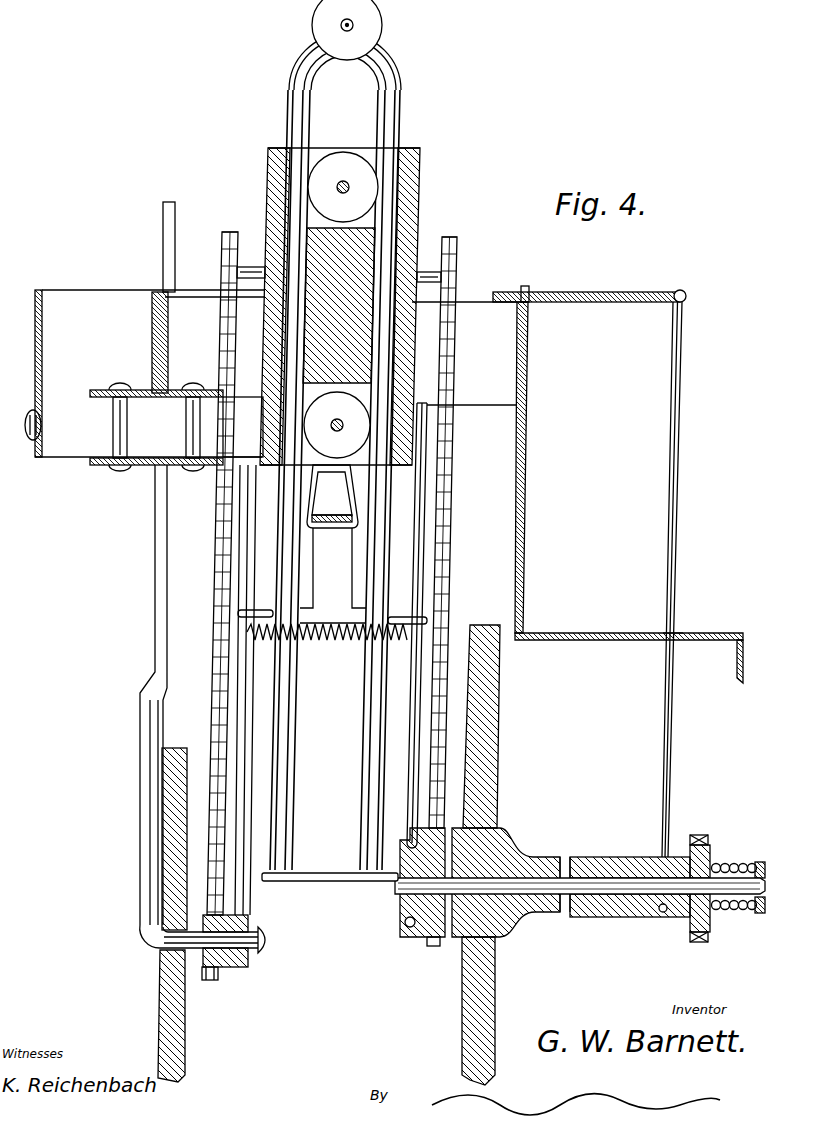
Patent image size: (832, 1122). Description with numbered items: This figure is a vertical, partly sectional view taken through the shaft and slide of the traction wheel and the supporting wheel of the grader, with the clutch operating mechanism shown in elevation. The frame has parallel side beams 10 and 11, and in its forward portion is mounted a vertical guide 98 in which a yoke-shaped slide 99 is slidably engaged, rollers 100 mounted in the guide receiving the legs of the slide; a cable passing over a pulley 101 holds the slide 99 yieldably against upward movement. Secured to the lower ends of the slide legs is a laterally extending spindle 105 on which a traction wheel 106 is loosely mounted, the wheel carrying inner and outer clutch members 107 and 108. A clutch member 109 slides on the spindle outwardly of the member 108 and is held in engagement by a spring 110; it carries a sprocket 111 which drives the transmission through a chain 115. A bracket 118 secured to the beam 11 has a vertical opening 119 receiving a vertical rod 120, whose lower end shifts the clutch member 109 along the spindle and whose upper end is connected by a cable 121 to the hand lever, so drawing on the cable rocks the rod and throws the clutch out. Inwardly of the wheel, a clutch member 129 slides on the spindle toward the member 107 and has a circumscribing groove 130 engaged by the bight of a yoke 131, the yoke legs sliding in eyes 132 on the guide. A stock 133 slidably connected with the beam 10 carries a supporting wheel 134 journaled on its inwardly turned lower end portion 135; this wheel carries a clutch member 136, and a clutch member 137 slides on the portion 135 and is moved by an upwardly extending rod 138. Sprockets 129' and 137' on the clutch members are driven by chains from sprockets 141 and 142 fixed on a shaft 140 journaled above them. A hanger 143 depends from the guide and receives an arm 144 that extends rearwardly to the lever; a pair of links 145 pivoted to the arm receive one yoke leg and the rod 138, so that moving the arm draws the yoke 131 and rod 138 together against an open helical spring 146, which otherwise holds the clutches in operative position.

The side beam 10 is at (157, 310).
The side beam 11 is at (528, 358).
The vertical guide 98 is at (414, 220).
The yoke-shaped slide 99 is at (392, 192).
The rollers 100 is at (362, 180).
The pulley 101 is at (378, 24).
The spindle 105 is at (530, 878).
The traction wheel 106 is at (488, 755).
The inner clutch member 107 is at (452, 842).
The outer clutch member 108 is at (595, 857).
The clutch member 109 is at (624, 912).
The spring 110 is at (722, 912).
The sprocket 111 is at (707, 848).
The chain 115 is at (698, 835).
The bracket 118 is at (525, 535).
The vertical opening 119 is at (667, 633).
The vertical rod 120 is at (676, 575).
The cable 121 is at (592, 305).
The clutch member 129 is at (394, 882).
The sprocket 129' is at (411, 955).
The circumscribing groove 130 is at (400, 838).
The yoke 131 is at (407, 773).
The eyes 132 is at (428, 452).
The stock 133 is at (155, 545).
The supporting wheel 134 is at (172, 1020).
The inwardly turned lower end portion 135 is at (152, 946).
The clutch member 136 is at (160, 920).
The clutch member 137 is at (240, 946).
The sprocket 137' is at (232, 985).
The rod 138 is at (247, 896).
The shaft 140 is at (446, 277).
The sprocket 141 is at (458, 247).
The sprocket 142 is at (228, 246).
The hanger 143 is at (392, 503).
The arm 144 is at (333, 544).
The links 145 is at (400, 625).
The open helical spring 146 is at (340, 636).